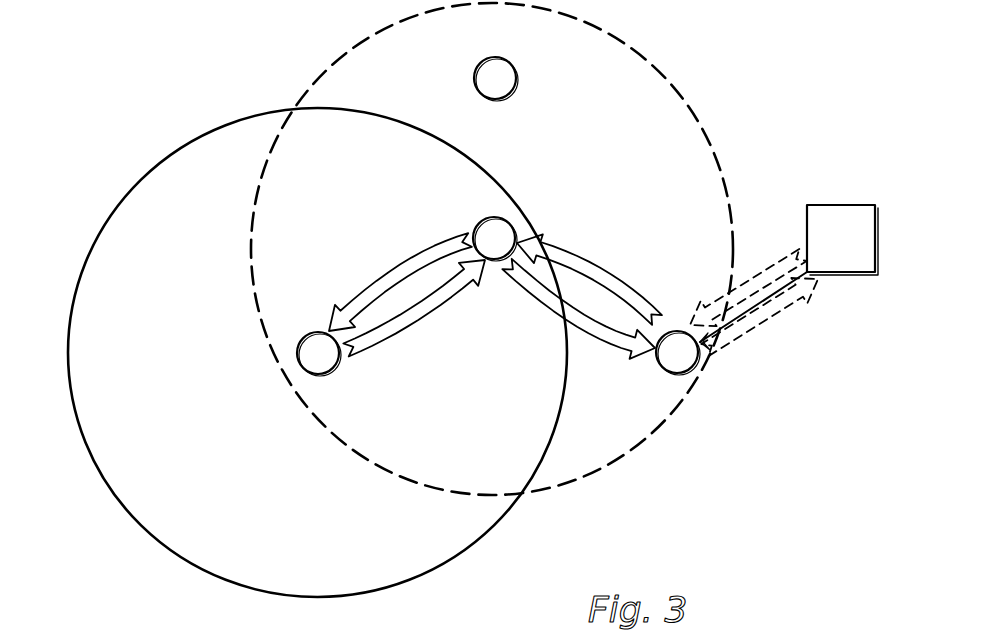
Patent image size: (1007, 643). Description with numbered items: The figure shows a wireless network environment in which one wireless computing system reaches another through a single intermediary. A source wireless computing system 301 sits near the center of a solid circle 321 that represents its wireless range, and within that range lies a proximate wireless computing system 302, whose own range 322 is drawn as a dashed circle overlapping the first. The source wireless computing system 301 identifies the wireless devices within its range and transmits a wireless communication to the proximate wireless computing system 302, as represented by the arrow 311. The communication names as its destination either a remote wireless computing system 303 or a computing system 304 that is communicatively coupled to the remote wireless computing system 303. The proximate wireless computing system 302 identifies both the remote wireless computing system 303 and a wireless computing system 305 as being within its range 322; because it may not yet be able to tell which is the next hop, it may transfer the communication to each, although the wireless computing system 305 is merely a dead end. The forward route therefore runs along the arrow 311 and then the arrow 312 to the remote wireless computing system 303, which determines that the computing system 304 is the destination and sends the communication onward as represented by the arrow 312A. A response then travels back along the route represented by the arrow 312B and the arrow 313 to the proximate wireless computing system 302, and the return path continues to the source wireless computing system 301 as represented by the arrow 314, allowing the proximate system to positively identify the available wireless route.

The source wireless computing system 301 is at (319, 354).
The proximate wireless computing system 302 is at (495, 239).
The remote wireless computing system 303 is at (678, 353).
The computing system 304 is at (842, 240).
The wireless computing system 305 is at (496, 79).
The arrow 311 is at (422, 328).
The arrow 312 is at (588, 334).
The arrow 312A is at (758, 334).
The arrow 312B is at (760, 263).
The arrow 313 is at (594, 267).
The arrow 314 is at (398, 266).
The circle 321 is at (124, 509).
The range 322 is at (681, 401).